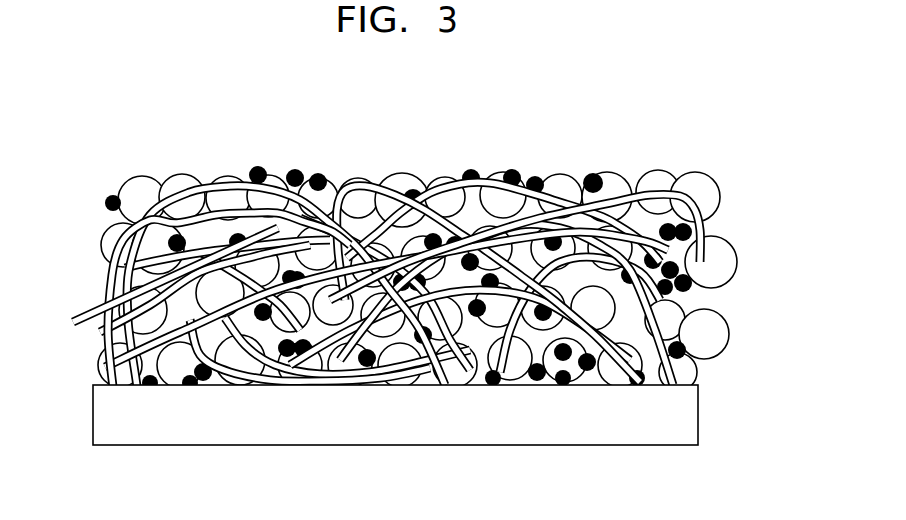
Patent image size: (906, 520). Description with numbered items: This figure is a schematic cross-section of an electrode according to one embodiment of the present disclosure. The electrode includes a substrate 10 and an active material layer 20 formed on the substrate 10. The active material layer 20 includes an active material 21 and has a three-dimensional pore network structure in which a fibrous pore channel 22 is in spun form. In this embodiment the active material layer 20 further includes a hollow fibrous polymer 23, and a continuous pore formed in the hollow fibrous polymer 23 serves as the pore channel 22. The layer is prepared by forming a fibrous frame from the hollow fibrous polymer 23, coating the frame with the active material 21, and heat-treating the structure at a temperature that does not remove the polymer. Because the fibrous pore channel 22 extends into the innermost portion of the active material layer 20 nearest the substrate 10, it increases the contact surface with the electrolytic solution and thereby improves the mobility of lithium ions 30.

The substrate 10 is at (98, 413).
The active material layer 20 is at (409, 248).
The active material 21 is at (727, 345).
The fibrous pore channel 22 is at (700, 222).
The hollow fibrous polymer 23 is at (698, 188).
The lithium ions 30 is at (591, 172).